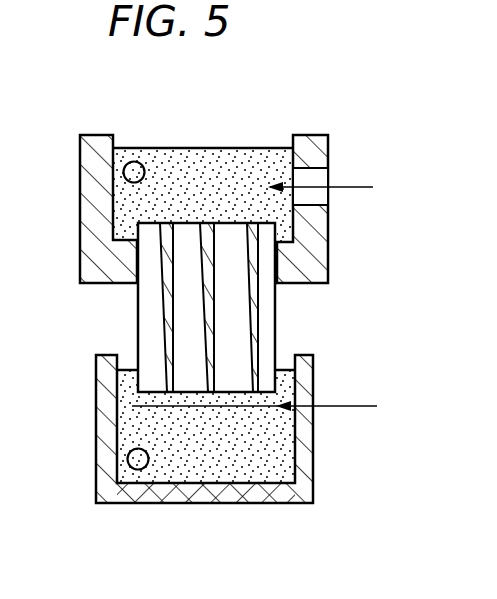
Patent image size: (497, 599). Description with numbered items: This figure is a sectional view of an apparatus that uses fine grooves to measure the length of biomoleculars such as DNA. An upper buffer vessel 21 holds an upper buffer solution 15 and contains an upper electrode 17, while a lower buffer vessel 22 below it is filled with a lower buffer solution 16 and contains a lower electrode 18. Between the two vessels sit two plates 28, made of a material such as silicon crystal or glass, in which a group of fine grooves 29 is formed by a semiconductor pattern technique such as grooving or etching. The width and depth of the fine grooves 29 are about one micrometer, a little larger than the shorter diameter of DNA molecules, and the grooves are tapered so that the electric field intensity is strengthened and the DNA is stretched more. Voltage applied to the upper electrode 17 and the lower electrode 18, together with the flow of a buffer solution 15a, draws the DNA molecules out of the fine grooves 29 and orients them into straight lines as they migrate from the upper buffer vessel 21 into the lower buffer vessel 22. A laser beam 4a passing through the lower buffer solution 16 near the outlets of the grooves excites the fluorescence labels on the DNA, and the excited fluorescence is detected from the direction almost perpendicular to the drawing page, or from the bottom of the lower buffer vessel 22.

The laser beam 4a is at (271, 407).
The upper buffer solution 15 is at (234, 172).
The buffer solution 15a is at (343, 189).
The lower buffer solution 16 is at (200, 453).
The upper electrode 17 is at (134, 161).
The lower electrode 18 is at (128, 465).
The upper buffer vessel 21 is at (313, 260).
The lower buffer vessel 22 is at (303, 447).
The plates 28 is at (277, 302).
The fine grooves 29 is at (163, 307).